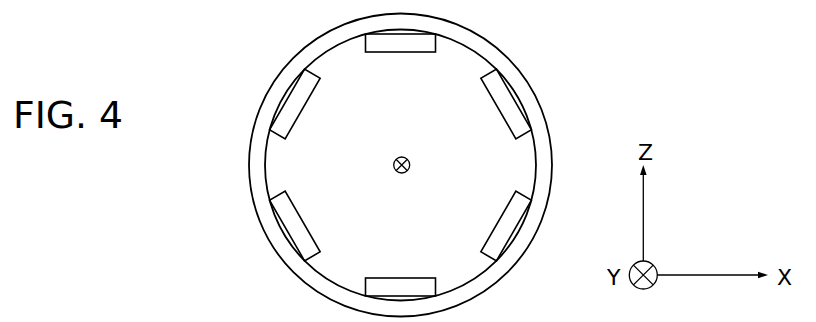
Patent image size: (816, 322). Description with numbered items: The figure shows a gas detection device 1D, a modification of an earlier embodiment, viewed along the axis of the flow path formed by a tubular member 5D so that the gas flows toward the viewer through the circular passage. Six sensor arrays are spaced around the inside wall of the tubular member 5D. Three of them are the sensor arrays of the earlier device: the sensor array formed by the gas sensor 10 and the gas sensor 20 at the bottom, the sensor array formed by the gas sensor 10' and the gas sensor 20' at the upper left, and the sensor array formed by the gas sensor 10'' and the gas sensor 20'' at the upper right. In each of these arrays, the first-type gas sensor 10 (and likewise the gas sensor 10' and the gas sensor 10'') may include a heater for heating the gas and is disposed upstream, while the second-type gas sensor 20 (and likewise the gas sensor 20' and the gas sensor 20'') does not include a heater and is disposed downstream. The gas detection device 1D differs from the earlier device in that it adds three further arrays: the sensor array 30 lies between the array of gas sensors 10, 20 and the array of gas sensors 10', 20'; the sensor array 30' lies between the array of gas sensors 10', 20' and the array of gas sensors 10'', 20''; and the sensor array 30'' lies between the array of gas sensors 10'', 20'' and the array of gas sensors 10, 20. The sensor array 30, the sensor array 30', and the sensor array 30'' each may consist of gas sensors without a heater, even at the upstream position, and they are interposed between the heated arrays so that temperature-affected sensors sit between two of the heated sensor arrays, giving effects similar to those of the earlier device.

The gas detection device 1D is at (546, 80).
The tubular member 5D is at (270, 87).
The gas sensor 10 is at (401, 265).
The gas sensor 20 is at (401, 287).
The gas sensor 10' is at (332, 104).
The gas sensor 20' is at (295, 104).
The gas sensor 10'' is at (484, 123).
The gas sensor 20'' is at (506, 104).
The sensor array 30 is at (307, 226).
The sensor array 30' is at (403, 63).
The sensor array 30'' is at (485, 226).